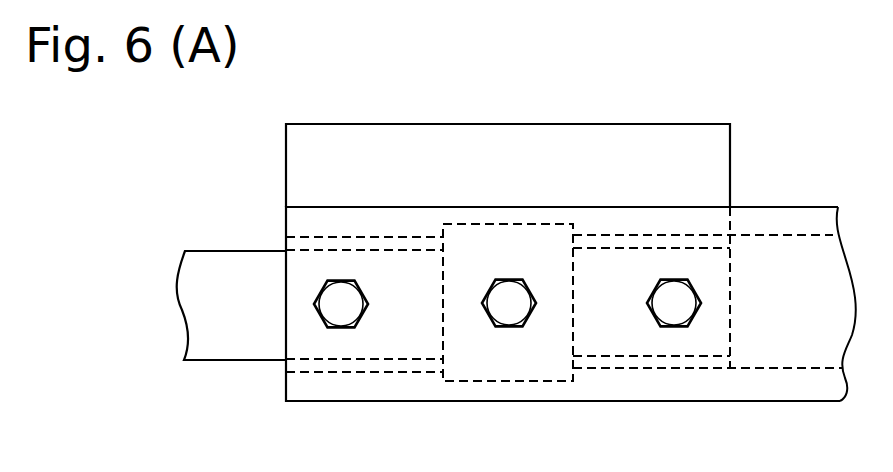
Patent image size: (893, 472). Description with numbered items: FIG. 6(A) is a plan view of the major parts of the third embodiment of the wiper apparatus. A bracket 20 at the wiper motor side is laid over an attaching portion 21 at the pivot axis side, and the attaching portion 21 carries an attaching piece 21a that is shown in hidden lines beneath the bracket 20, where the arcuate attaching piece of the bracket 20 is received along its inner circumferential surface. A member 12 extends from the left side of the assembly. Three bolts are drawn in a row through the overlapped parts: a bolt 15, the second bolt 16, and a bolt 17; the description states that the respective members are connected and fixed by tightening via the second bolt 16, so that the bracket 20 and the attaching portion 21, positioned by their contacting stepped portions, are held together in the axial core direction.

The mounting strip 12 is at (253, 332).
The bolt 15 is at (343, 316).
The second bolt 16 is at (512, 316).
The bolt 17 is at (682, 305).
The bracket 20 is at (668, 157).
The attaching portion 21 is at (807, 383).
The attaching piece 21a is at (623, 336).